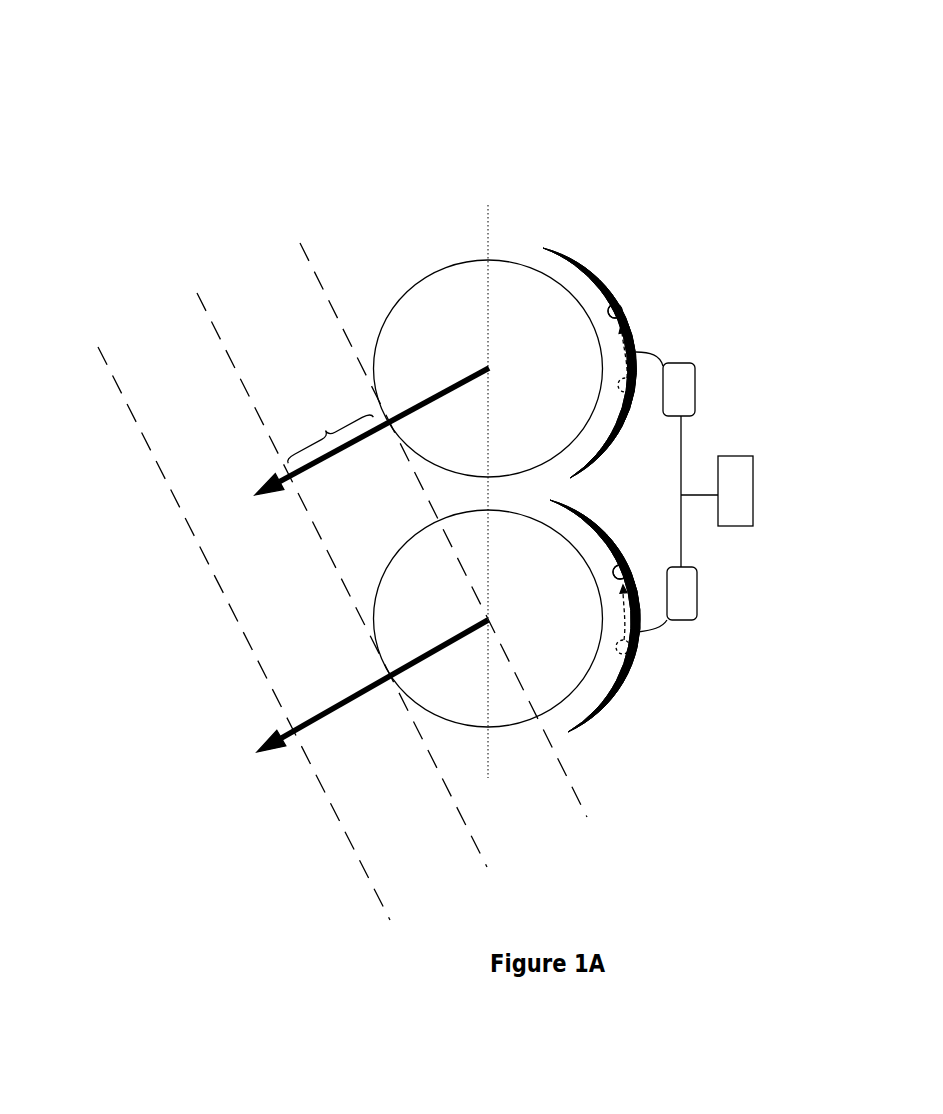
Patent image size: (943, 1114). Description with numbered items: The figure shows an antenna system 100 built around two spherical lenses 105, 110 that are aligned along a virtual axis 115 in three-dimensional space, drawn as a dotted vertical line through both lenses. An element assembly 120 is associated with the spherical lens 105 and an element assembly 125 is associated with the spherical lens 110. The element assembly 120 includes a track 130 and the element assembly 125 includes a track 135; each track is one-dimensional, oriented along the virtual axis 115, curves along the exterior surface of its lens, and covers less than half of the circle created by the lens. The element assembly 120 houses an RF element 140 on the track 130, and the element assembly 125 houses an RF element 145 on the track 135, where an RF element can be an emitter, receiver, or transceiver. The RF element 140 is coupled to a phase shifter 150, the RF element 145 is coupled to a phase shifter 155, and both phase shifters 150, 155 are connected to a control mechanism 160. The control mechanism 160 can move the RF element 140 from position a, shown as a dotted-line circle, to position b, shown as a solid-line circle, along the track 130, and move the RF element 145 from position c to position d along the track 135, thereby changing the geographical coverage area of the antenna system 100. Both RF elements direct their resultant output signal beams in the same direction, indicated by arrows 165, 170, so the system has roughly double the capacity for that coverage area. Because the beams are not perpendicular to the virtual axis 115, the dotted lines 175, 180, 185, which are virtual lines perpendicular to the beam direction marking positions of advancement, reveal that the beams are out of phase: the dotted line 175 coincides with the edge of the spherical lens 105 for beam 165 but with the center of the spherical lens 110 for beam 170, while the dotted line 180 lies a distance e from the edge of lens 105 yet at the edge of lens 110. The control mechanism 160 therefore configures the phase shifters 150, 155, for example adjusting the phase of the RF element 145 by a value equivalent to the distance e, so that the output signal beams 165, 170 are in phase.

The antenna system 100 is at (248, 58).
The spherical lens 105 is at (440, 262).
The spherical lens 110 is at (503, 728).
The virtual axis 115 is at (488, 206).
The element assembly 120 is at (609, 252).
The element assembly 125 is at (630, 724).
The track 130 is at (618, 291).
The track 135 is at (618, 694).
The RF element 140 is at (608, 306).
The RF element 145 is at (614, 567).
The phase shifter 150 is at (694, 366).
The phase shifter 155 is at (697, 570).
The control mechanism 160 is at (753, 470).
The output signal beam 165 is at (280, 477).
The output signal beam 170 is at (347, 692).
The dotted line 175 is at (300, 243).
The dotted line 180 is at (197, 293).
The dotted line 185 is at (98, 347).
The position a is at (635, 400).
The position b is at (622, 311).
The position c is at (630, 648).
The position d is at (625, 566).
The distance e is at (347, 423).